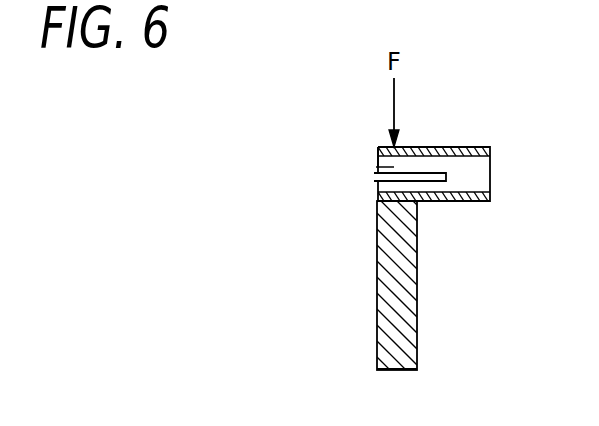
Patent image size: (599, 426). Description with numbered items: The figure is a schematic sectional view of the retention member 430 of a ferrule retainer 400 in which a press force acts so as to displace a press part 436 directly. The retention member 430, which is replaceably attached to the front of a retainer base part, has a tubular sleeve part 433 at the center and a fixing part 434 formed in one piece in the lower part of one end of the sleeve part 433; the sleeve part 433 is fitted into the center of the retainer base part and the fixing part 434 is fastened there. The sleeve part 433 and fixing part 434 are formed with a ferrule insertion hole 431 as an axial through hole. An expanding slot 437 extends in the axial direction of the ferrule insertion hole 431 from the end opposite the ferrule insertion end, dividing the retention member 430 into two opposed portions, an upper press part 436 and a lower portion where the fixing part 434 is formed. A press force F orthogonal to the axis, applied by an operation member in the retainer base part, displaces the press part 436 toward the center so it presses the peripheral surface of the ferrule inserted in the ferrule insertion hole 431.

The ferrule retainer 400 is at (343, 106).
The retention member 430 is at (366, 325).
The ferrule insertion hole 431 is at (476, 182).
The sleeve part 433 is at (475, 148).
The fixing part 434 is at (407, 277).
The press part 436 is at (380, 152).
The expanding slot 437 is at (380, 177).